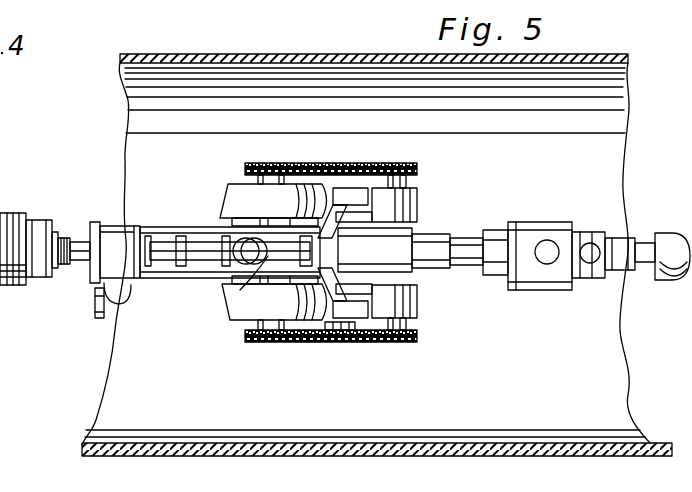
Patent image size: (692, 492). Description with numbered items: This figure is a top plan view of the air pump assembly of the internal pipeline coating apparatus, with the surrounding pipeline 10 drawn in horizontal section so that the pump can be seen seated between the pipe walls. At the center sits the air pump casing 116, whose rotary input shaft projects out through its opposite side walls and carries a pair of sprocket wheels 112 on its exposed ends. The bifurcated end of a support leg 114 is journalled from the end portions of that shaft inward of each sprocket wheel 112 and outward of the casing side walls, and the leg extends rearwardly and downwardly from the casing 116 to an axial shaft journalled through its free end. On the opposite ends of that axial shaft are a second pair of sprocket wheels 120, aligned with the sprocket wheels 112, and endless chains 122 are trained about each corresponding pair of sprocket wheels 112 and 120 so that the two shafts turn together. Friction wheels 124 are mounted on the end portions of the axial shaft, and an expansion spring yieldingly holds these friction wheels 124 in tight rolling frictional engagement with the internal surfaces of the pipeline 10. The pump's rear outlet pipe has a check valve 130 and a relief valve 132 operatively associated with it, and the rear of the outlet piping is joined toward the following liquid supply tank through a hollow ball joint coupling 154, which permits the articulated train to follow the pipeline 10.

The pipeline 10 is at (377, 231).
The sprocket wheels 112 is at (422, 258).
The support leg 114 is at (345, 227).
The air pump casing 116 is at (405, 228).
The sprocket wheels 120 is at (330, 258).
The endless chains 122 is at (339, 351).
The friction wheels 124 is at (243, 261).
The check valve 130 is at (218, 289).
The relief valve 132 is at (103, 250).
The hollow ball joint coupling 154 is at (666, 236).